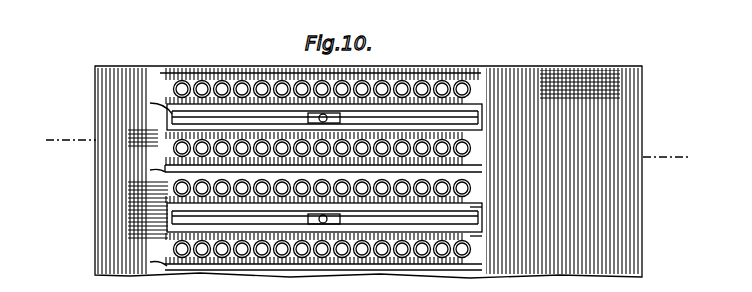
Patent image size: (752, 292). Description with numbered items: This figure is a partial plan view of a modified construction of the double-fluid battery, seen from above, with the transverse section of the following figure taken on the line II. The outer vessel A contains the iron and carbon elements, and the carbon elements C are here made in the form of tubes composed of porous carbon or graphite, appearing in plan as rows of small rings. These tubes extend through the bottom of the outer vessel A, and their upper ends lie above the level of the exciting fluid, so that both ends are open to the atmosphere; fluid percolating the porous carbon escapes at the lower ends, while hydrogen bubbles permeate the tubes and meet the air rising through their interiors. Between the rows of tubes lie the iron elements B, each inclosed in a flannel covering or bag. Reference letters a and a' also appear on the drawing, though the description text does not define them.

The outer vessel A is at (366, 172).
The iron element B is at (482, 122).
The carbon elements C is at (228, 78).
The rod a is at (331, 214).
The rod end a' is at (152, 180).
The section line II is at (363, 147).